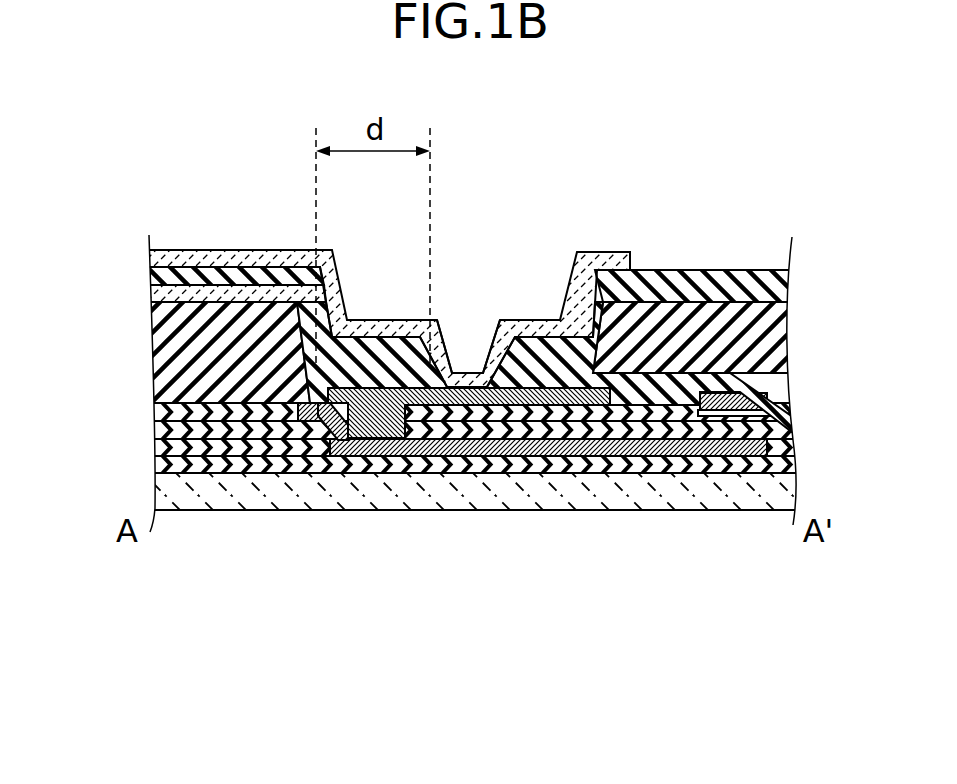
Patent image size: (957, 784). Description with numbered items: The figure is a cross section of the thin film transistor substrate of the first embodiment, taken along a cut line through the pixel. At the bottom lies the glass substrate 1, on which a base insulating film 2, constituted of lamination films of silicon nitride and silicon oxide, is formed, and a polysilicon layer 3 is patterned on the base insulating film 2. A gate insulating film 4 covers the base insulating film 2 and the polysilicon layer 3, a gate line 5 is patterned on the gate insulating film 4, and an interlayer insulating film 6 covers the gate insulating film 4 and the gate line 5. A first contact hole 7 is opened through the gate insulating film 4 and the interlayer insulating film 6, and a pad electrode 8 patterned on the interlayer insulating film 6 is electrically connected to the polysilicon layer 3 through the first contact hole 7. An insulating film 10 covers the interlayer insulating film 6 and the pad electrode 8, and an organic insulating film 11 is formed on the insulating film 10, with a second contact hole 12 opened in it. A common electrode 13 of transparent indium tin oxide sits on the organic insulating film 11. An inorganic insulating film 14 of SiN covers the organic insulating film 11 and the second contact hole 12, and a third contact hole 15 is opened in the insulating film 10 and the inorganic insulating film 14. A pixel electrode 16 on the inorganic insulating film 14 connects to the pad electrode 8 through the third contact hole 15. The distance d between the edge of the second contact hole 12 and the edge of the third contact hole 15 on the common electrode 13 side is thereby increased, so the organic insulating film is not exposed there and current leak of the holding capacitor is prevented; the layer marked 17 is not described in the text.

The glass substrate 1 is at (763, 493).
The base insulating film 2 is at (785, 467).
The polysilicon layer 3 is at (462, 447).
The gate insulating film 4 is at (783, 450).
The gate line 5 is at (700, 403).
The interlayer insulating film 6 is at (790, 434).
The first contact hole 7 is at (338, 430).
The pad electrode 8 is at (527, 395).
The insulating film 10 is at (783, 413).
The organic insulating film 11 is at (767, 337).
The second contact hole 12 is at (308, 337).
The common electrode 13 is at (150, 292).
The inorganic insulating film 14 is at (150, 277).
The third contact hole 15 is at (525, 345).
The pixel electrode 16 is at (150, 258).
The wiring layer 17 is at (717, 420).